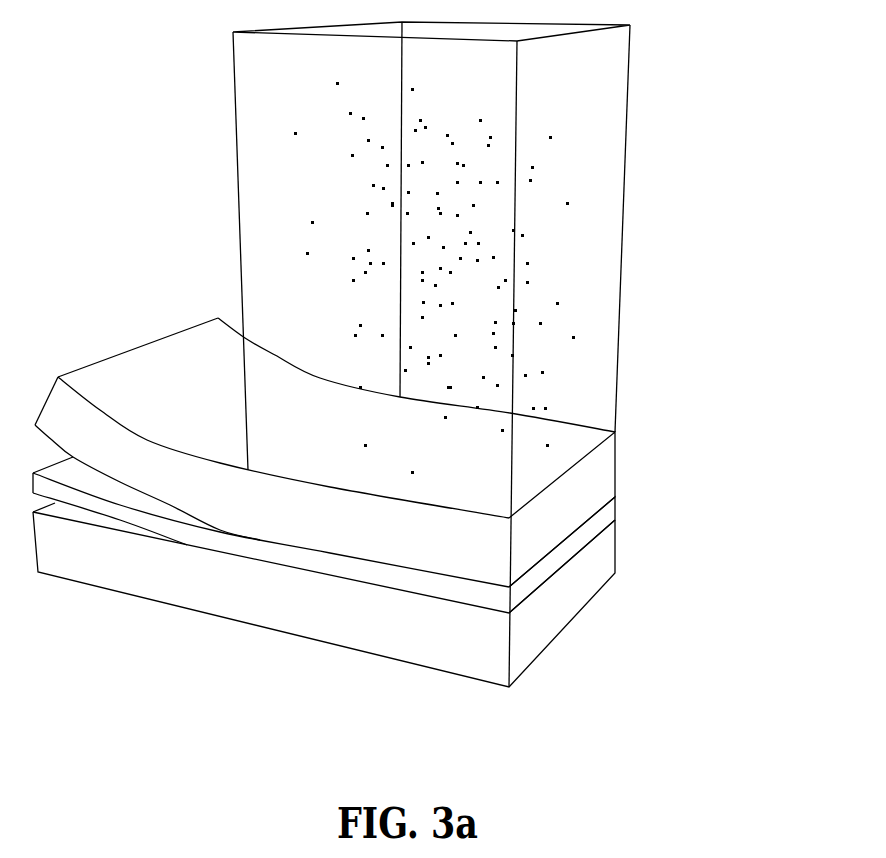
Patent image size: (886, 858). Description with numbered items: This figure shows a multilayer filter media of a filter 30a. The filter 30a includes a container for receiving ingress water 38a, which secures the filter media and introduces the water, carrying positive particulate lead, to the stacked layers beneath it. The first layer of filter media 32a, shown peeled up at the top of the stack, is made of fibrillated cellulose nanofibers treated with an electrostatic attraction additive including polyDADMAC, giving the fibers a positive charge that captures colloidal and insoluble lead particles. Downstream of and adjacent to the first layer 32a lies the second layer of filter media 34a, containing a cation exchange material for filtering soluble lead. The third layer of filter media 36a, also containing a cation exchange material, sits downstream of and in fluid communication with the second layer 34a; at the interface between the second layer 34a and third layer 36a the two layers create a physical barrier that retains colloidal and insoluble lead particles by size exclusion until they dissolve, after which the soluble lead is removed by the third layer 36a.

The filter 30a is at (697, 382).
The first layer of filter media 32a is at (559, 531).
The second layer of filter media 34a is at (605, 512).
The third layer of filter media 36a is at (581, 598).
The container for receiving ingress water 38a is at (601, 278).